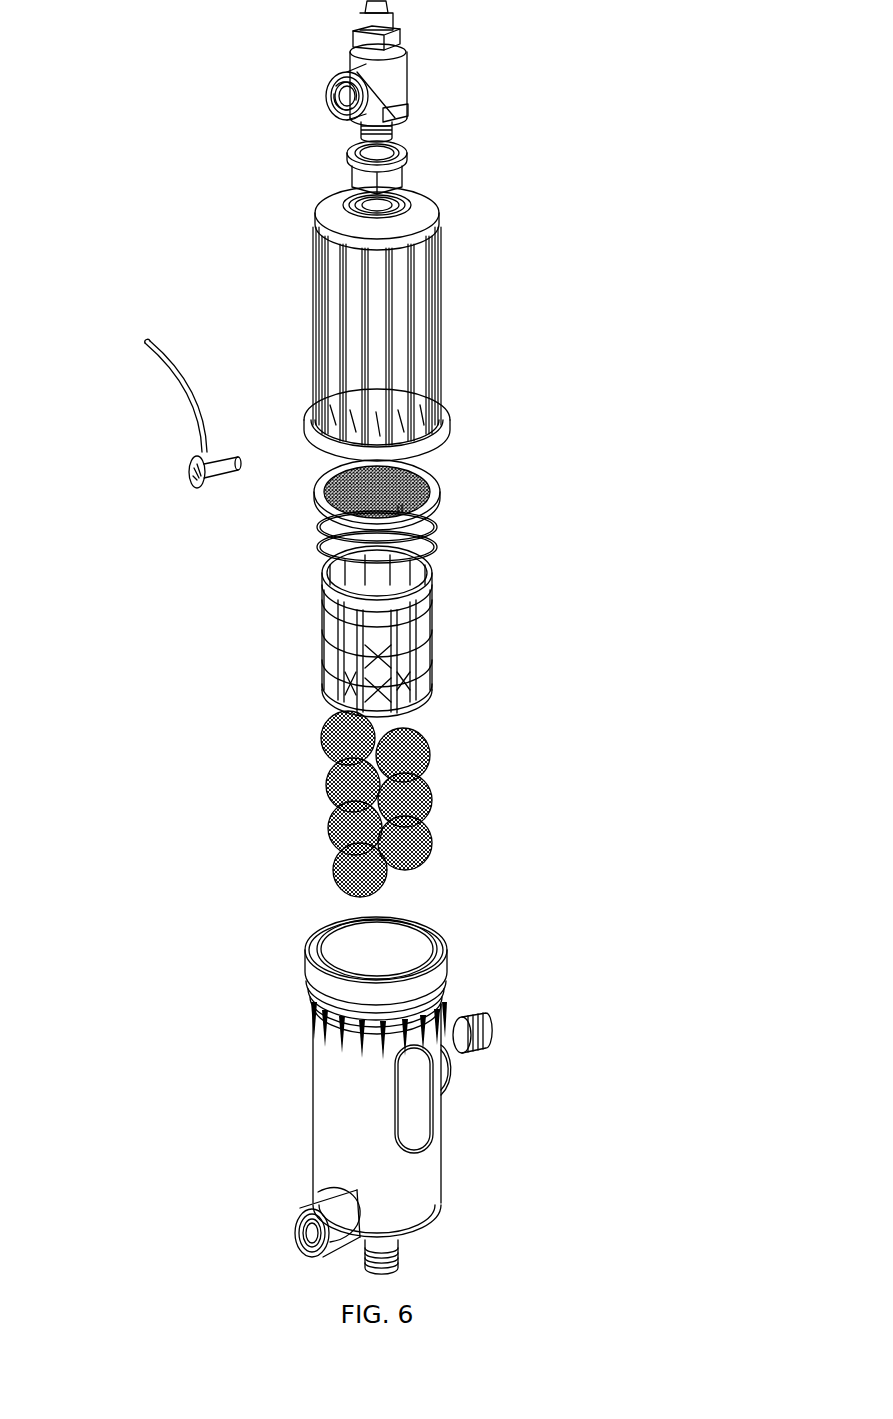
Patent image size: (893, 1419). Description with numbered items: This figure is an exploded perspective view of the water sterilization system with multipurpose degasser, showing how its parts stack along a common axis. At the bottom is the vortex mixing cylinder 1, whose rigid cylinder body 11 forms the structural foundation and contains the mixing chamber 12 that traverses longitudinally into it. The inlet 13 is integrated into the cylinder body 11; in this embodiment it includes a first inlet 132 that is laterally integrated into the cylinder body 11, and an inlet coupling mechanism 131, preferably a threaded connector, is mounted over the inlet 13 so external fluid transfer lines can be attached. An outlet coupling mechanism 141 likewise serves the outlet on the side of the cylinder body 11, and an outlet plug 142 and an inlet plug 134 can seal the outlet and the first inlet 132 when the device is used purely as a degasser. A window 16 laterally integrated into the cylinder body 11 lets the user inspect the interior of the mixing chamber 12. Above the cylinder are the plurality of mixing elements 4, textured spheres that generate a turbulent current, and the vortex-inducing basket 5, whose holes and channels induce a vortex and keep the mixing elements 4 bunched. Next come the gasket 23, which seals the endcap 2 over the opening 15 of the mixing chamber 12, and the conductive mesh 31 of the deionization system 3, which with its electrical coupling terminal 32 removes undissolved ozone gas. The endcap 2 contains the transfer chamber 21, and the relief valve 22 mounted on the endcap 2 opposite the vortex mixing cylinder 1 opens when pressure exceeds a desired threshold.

The vortex mixing cylinder 1 is at (346, 1060).
The endcap 2 is at (417, 200).
The deionization system 3 is at (173, 441).
The mixing elements 4 is at (292, 826).
The vortex-inducing basket 5 is at (325, 656).
The cylinder body 11 is at (320, 1068).
The mixing chamber 12 is at (379, 958).
The inlet 13 is at (256, 1194).
The opening 15 is at (318, 936).
The window 16 is at (428, 1128).
The transfer chamber 21 is at (370, 204).
The relief valve 22 is at (396, 80).
The gasket 23 is at (437, 527).
The conductive mesh 31 is at (435, 478).
The electrical coupling terminal 32 is at (220, 468).
The inlet coupling mechanism 131 is at (310, 1203).
The first inlet 132 is at (294, 1247).
The inlet plug 134 is at (400, 1248).
The outlet coupling mechanism 141 is at (442, 1092).
The outlet plug 142 is at (490, 1030).